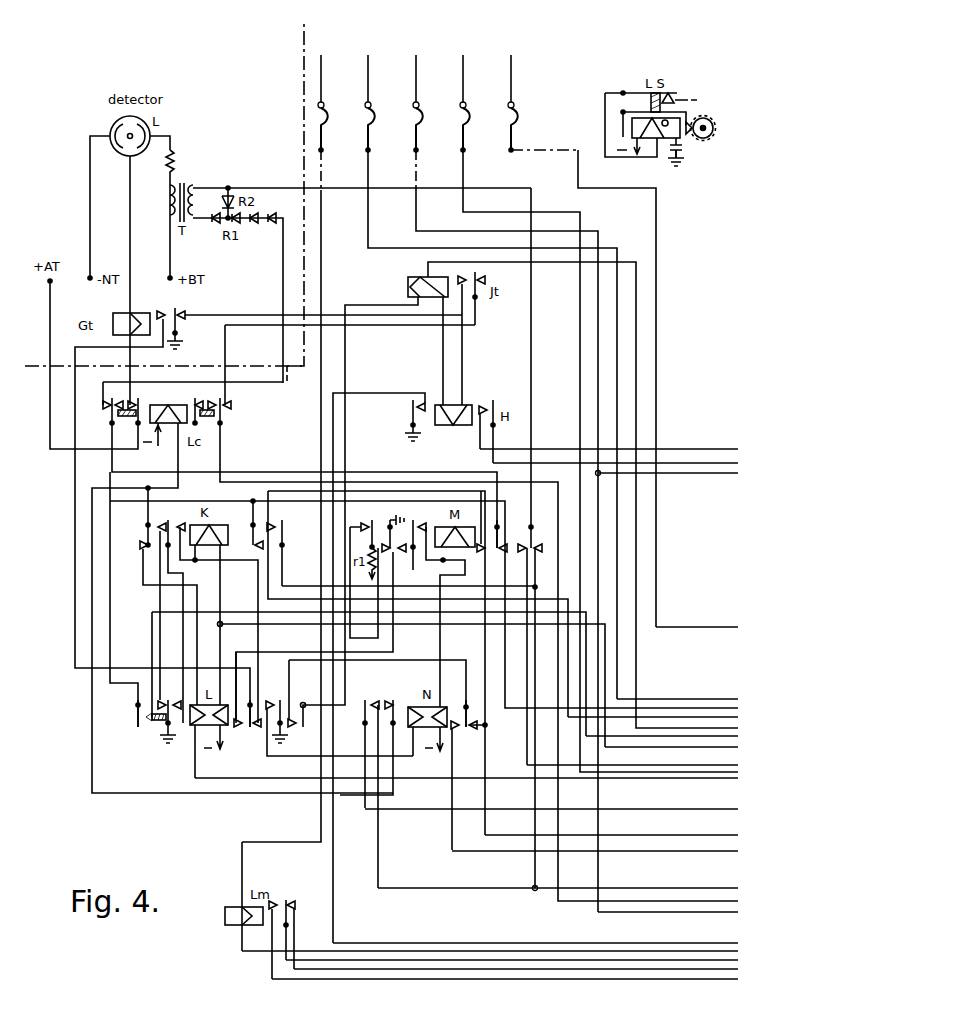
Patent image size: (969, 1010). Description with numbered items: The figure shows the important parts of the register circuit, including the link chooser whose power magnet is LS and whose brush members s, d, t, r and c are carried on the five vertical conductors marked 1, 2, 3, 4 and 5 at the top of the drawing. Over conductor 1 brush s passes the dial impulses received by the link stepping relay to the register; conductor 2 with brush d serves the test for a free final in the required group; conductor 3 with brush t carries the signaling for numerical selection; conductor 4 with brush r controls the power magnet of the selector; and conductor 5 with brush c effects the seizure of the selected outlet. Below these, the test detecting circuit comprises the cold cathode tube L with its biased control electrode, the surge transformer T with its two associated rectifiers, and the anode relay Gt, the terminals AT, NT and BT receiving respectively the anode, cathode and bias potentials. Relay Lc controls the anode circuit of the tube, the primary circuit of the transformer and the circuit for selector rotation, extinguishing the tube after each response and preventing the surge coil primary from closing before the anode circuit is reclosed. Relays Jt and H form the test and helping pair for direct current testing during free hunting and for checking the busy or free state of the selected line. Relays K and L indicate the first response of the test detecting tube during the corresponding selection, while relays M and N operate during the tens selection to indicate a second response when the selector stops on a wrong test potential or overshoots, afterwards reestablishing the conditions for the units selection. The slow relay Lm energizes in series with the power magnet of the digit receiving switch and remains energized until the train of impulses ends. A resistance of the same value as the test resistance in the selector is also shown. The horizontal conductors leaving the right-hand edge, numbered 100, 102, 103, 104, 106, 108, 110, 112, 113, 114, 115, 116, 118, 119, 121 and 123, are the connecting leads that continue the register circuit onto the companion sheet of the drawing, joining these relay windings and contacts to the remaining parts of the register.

The input terminal 1 (switch s) 1 is at (288, 437).
The input terminal 2 (switch d) 2 is at (489, 366).
The input terminal 3 (switch t) 3 is at (504, 472).
The input terminal 4 (switch r) 4 is at (597, 402).
The input terminal 5 (switch c) 5 is at (580, 330).
The output line 100 is at (625, 450).
The output line 102 is at (683, 474).
The output line 103 is at (713, 628).
The output line 104 is at (694, 700).
The output line 106 is at (669, 718).
The output line 108 is at (678, 737).
The output line 110 is at (649, 764).
The output line 112 is at (483, 781).
The output line 113 is at (568, 811).
The output line 114 is at (628, 835).
The output line 115 is at (611, 852).
The output line 116 is at (574, 889).
The output line 118 is at (684, 913).
The output line 119 is at (552, 943).
The output line 121 is at (528, 961).
The output line 123 is at (521, 980).